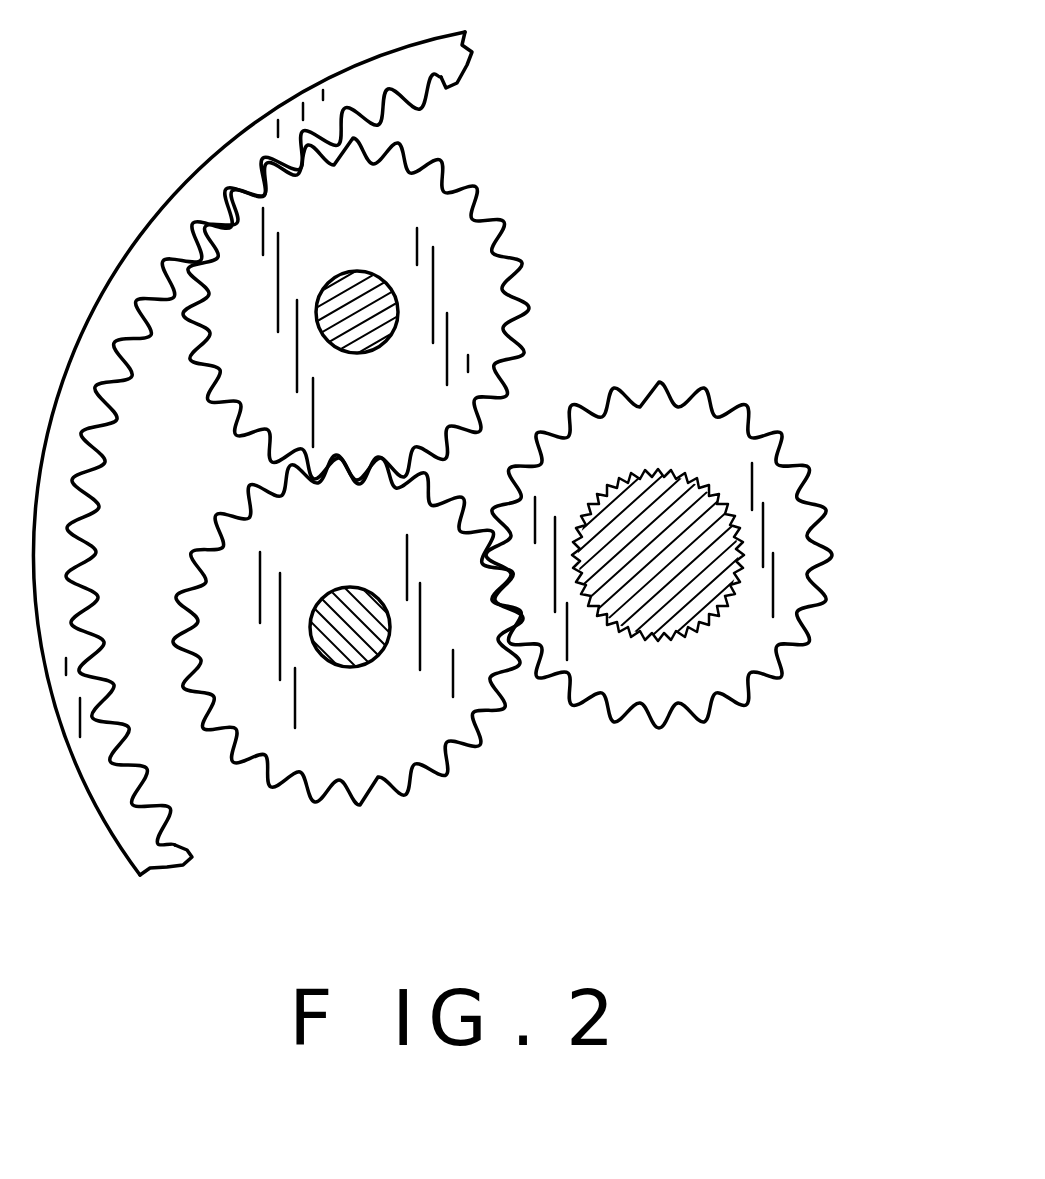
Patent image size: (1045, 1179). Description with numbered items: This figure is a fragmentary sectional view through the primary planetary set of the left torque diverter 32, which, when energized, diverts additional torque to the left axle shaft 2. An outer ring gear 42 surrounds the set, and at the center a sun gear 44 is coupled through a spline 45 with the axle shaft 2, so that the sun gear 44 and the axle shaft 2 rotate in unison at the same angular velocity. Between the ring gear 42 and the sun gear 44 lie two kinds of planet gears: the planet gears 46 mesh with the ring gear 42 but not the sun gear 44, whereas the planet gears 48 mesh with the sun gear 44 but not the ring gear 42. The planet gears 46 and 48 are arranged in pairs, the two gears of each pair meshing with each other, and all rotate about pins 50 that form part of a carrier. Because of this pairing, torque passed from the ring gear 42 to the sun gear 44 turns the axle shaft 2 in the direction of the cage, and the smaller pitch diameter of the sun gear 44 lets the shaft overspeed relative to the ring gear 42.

The left axle shaft 2 is at (726, 501).
The left torque diverter 32 is at (355, 453).
The ring gear 42 is at (413, 97).
The sun gear 44 is at (714, 521).
The spline 45 is at (673, 470).
The planet gear 46 is at (470, 263).
The planet gear 48 is at (425, 725).
The pin 50 is at (370, 298).